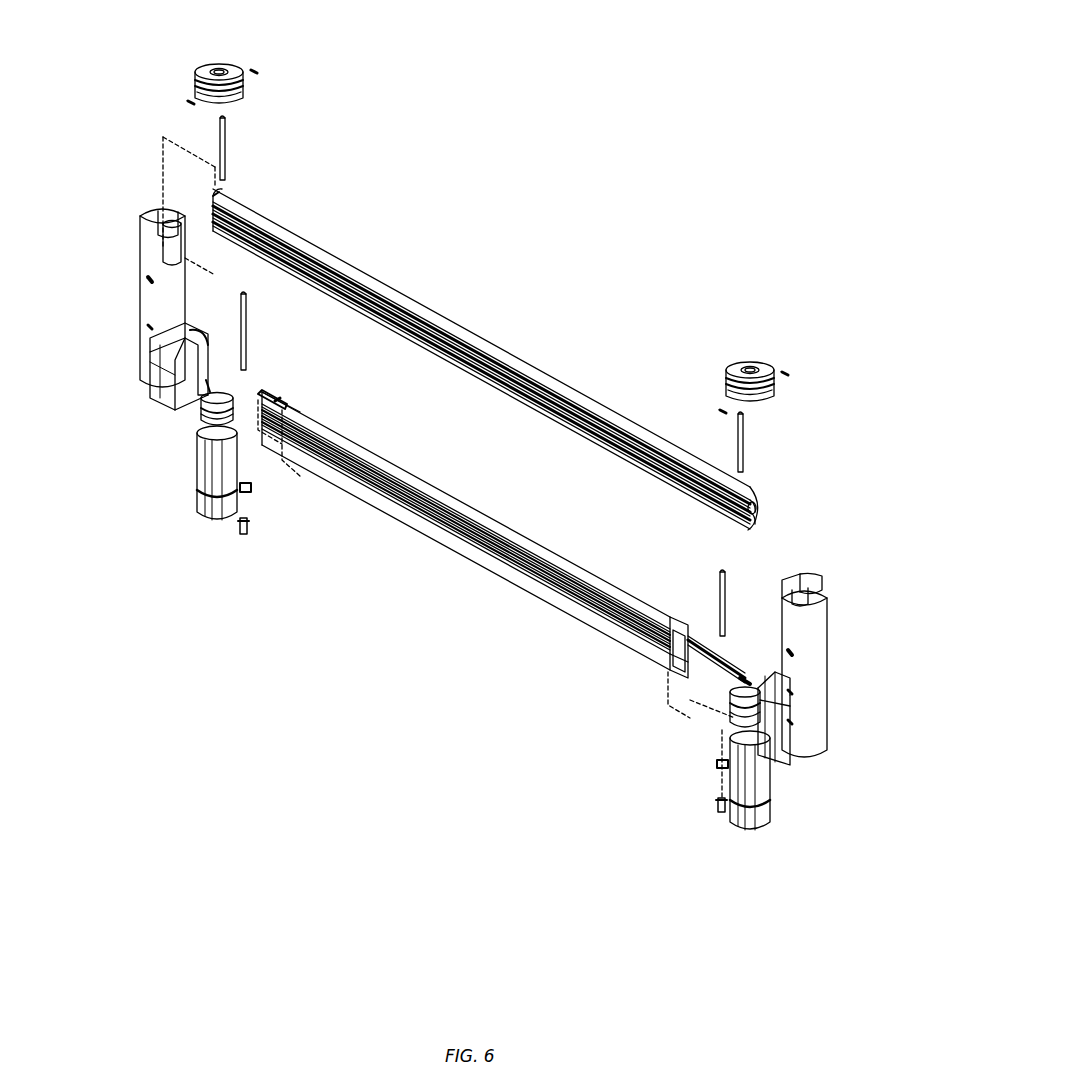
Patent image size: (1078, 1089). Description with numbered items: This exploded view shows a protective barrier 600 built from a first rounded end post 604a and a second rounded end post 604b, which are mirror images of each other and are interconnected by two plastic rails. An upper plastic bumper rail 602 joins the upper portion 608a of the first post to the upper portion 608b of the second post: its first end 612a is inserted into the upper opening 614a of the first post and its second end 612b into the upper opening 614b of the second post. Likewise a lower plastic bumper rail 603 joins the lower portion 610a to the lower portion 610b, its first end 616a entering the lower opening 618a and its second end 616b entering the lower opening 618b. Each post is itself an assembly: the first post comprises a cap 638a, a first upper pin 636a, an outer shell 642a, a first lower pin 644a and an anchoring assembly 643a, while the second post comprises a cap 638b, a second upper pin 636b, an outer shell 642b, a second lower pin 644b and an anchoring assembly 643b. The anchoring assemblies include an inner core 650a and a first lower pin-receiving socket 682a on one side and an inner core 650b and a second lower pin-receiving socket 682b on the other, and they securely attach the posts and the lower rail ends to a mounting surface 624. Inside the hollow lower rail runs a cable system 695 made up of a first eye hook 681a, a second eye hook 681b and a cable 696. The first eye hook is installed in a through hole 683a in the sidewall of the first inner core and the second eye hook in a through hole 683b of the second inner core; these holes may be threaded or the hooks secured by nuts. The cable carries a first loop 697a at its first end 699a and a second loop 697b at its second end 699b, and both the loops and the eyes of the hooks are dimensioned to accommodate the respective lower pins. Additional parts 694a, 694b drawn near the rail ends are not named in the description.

The protective barrier 600 is at (702, 152).
The upper plastic bumper rail 602 is at (485, 350).
The lower plastic bumper rail 603 is at (504, 529).
The first rounded end post 604a is at (152, 142).
The second rounded end post 604b is at (833, 524).
The upper portion of the first rounded end post 608a is at (132, 293).
The upper portion of the second rounded end post 608b is at (843, 653).
The lower portion of the first rounded end post 610a is at (148, 345).
The lower portion of the second rounded end post 610b is at (805, 708).
The first end of the upper plastic bumper rail 612a is at (245, 200).
The second end of the upper plastic bumper rail 612b is at (715, 455).
The upper opening of the first rounded end post 614a is at (152, 214).
The upper opening of the second rounded end post 614b is at (805, 580).
The first end of the lower plastic bumper rail 616a is at (330, 412).
The second end of the lower plastic bumper rail 616b is at (655, 600).
The lower opening of the first rounded end post 618a is at (165, 392).
The lower opening of the second rounded end post 618b is at (735, 733).
The mounting surface 624 is at (386, 646).
The first upper pin 636a is at (228, 150).
The second upper pin 636b is at (752, 446).
The cap 638a is at (235, 66).
The cap 638b is at (738, 368).
The outer shell 642a is at (145, 250).
The outer shell 642b is at (830, 660).
The anchoring assembly 643a is at (158, 534).
The anchoring assembly 643b is at (818, 830).
The first lower pin 644a is at (250, 335).
The second lower pin 644b is at (730, 582).
The inner core 650a is at (205, 496).
The inner core 650b is at (772, 788).
The first eye hook 681a is at (250, 494).
The second eye hook 681b is at (716, 764).
The first lower pin-receiving socket 682a is at (240, 530).
The second lower pin-receiving socket 682b is at (720, 812).
The through hole 683a is at (200, 462).
The through hole 683b is at (722, 776).
The first connector 694a is at (292, 404).
The second connector 694b is at (665, 600).
The cable system 695 is at (460, 474).
The cable 696 is at (400, 445).
The first loop 697a is at (270, 455).
The second loop 697b is at (740, 688).
The first end of the cable 699a is at (276, 396).
The second end of the cable 699b is at (712, 605).